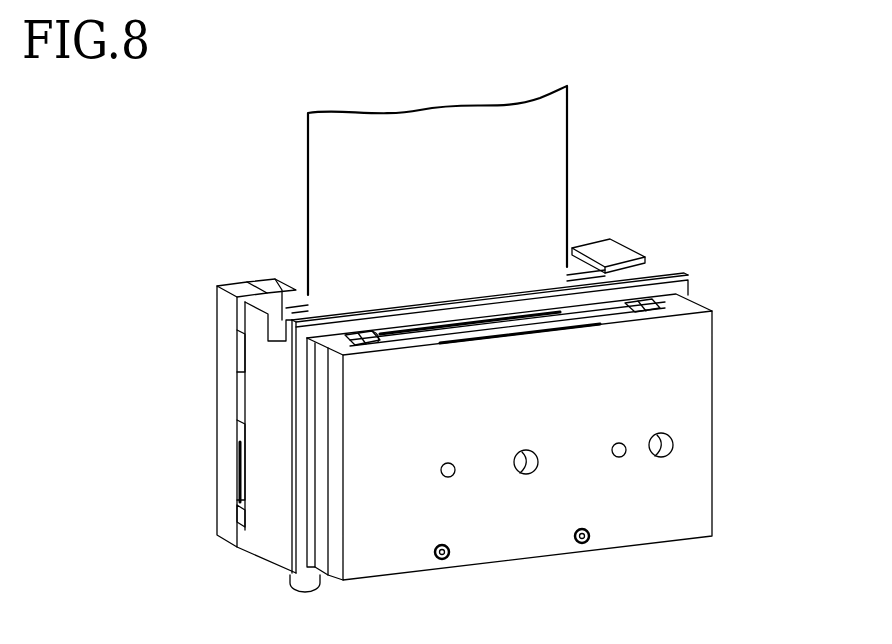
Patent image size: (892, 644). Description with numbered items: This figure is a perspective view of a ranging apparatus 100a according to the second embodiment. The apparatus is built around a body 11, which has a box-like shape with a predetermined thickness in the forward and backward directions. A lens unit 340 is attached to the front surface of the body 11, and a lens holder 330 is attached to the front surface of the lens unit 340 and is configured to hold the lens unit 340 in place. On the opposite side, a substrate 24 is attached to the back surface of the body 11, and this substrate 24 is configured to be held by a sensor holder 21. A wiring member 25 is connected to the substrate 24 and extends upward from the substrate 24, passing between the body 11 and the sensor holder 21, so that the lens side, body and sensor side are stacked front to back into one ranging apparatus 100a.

The ranging apparatus 100a is at (735, 192).
The lens holder 330 is at (697, 406).
The lens unit 340 is at (622, 302).
The sensor holder 21 is at (228, 412).
The substrate 24 is at (240, 472).
The body 11 is at (267, 525).
The wiring member 25 is at (545, 160).